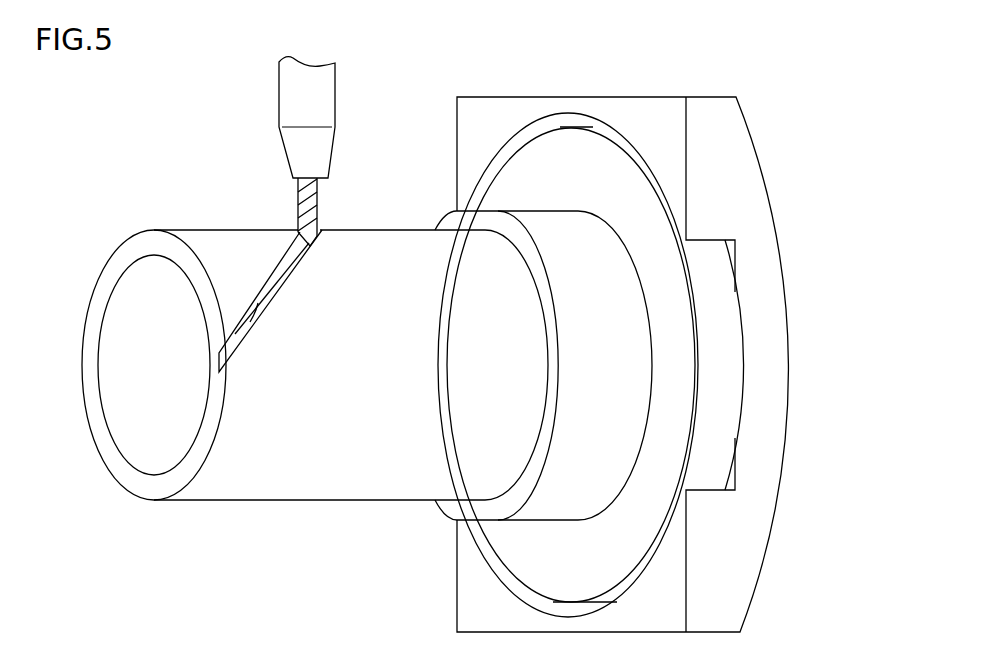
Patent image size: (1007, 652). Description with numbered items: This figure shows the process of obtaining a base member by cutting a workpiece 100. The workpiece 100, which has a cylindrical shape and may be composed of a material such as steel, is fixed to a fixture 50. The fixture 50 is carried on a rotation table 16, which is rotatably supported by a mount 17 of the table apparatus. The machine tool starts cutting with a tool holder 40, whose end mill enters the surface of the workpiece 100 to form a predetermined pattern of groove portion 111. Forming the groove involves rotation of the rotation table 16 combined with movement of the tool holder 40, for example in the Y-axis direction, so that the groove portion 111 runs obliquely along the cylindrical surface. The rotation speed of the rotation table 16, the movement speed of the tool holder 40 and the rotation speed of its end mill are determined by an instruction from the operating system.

The tool holder 40 is at (295, 97).
The groove portion 111 is at (256, 298).
The workpiece 100 is at (241, 524).
The fixture 50 is at (617, 317).
The rotation table 16 is at (677, 385).
The mount 17 is at (472, 602).